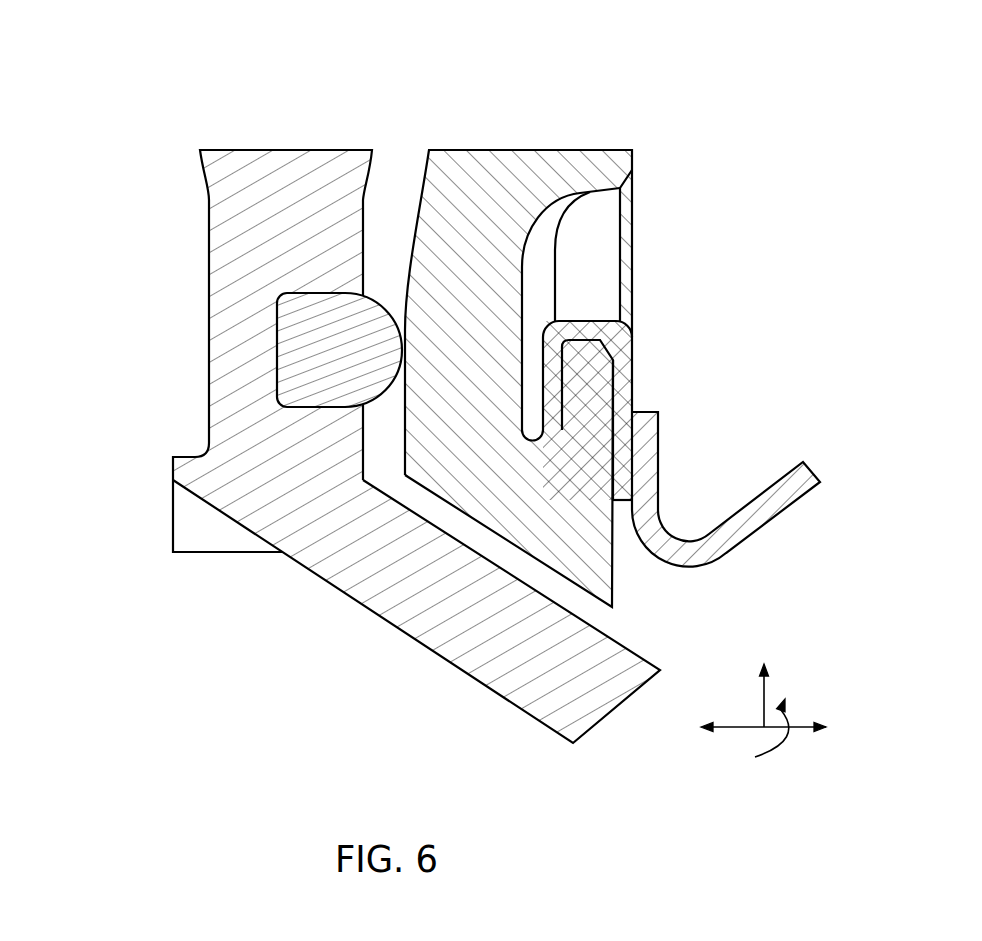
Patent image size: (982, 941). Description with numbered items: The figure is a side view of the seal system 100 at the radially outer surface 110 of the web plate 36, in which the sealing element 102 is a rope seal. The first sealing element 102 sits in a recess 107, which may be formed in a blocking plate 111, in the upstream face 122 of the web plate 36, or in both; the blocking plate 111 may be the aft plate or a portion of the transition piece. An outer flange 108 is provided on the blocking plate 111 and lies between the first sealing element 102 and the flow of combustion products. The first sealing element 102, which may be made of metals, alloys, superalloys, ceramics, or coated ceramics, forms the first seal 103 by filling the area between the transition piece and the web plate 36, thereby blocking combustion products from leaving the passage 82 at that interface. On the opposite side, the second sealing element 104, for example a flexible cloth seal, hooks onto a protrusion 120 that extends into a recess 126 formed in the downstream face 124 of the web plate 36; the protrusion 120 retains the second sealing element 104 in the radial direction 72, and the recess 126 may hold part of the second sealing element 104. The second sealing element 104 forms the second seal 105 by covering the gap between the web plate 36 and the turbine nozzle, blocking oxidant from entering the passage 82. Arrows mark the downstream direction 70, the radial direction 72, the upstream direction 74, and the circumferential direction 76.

The seal system 100 is at (126, 66).
The blocking plate 111 is at (267, 172).
The outer flange 108 is at (335, 587).
The recess 107 is at (177, 499).
The passage 82 is at (241, 586).
The sealing element 102 is at (315, 348).
The first seal 103 is at (563, 339).
The upstream face 122 is at (417, 222).
The web plate 36 is at (538, 167).
The recess 126 is at (600, 245).
The downstream face 124 is at (630, 202).
The second seal 105 is at (640, 382).
The second sealing element 104 is at (587, 332).
The protrusion 120 is at (593, 398).
The radially outer surface 110 is at (515, 521).
The radial direction 72 is at (760, 700).
The upstream direction 74 is at (731, 733).
The downstream direction 70 is at (800, 733).
The circumferential direction 76 is at (778, 753).